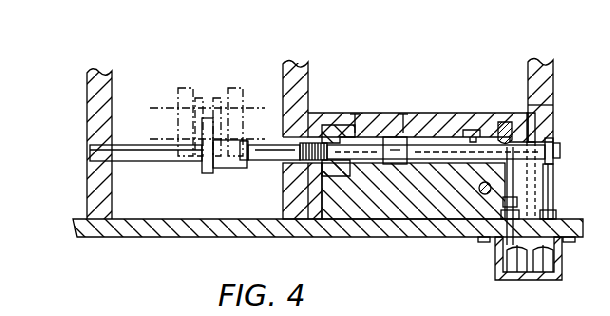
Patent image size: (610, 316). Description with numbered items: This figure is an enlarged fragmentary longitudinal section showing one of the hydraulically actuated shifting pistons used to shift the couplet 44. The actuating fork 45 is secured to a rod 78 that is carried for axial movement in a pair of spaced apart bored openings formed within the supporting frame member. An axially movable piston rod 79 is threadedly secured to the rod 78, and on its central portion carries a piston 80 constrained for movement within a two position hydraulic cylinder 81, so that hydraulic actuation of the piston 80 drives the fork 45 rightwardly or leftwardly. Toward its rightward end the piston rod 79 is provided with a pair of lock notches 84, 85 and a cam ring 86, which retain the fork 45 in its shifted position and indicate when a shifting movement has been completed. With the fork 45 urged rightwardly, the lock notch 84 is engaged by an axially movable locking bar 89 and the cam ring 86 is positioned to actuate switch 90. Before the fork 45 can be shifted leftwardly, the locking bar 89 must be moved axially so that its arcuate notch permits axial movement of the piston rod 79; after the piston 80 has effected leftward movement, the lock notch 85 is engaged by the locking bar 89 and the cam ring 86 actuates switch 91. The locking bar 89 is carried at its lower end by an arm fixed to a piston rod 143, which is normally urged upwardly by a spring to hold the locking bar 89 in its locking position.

The couplet 44 is at (206, 80).
The actuating fork 45 is at (203, 168).
The rod 78 is at (264, 161).
The piston rod 79 is at (432, 147).
The piston 80 is at (386, 137).
The two position hydraulic cylinder 81 is at (362, 162).
The lock notch 84 is at (530, 132).
The lock notch 85 is at (553, 112).
The cam ring 86 is at (556, 140).
The locking bar 89 is at (503, 122).
The switch 90 is at (556, 262).
The switch 91 is at (493, 276).
The piston rod 143 is at (484, 195).